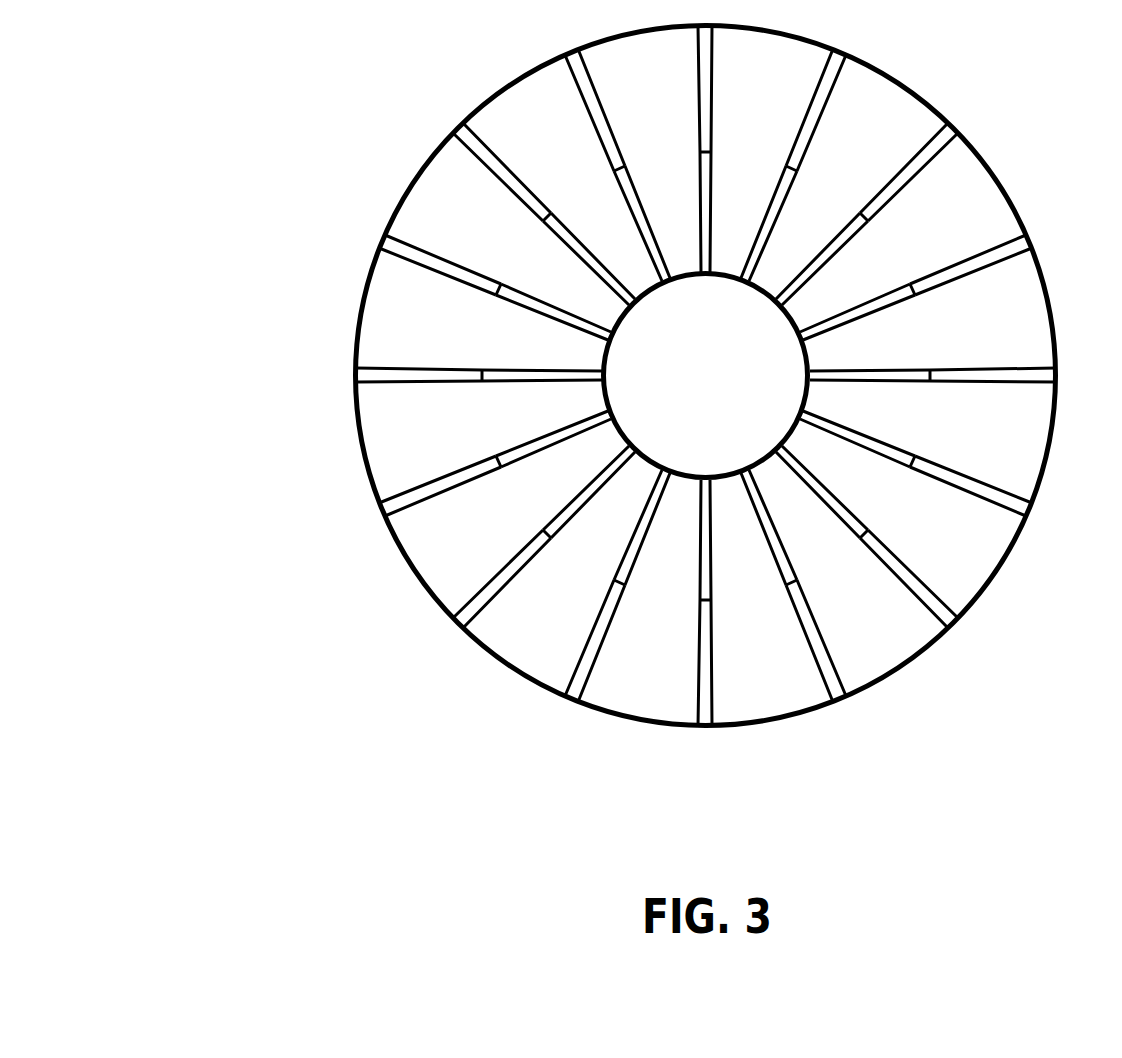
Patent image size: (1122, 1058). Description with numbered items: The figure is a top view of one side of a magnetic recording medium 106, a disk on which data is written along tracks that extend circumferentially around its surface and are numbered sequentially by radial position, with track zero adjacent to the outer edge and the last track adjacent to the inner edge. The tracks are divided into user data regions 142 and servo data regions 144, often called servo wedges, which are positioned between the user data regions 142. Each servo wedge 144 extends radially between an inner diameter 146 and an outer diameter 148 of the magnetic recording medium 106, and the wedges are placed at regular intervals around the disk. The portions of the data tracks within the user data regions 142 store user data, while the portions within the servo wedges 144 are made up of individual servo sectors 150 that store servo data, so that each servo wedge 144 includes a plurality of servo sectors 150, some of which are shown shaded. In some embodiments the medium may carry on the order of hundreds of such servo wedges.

The magnetic recording medium 106 is at (238, 128).
The user data regions 142 is at (1000, 430).
The servo data regions 144 is at (1033, 372).
The inner diameter 146 is at (706, 292).
The outer diameter 148 is at (437, 140).
The servo sectors 150 is at (695, 605).